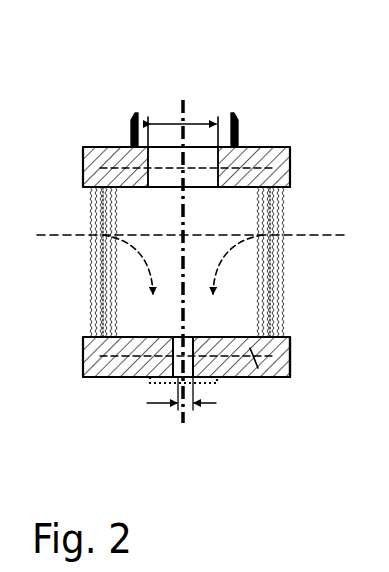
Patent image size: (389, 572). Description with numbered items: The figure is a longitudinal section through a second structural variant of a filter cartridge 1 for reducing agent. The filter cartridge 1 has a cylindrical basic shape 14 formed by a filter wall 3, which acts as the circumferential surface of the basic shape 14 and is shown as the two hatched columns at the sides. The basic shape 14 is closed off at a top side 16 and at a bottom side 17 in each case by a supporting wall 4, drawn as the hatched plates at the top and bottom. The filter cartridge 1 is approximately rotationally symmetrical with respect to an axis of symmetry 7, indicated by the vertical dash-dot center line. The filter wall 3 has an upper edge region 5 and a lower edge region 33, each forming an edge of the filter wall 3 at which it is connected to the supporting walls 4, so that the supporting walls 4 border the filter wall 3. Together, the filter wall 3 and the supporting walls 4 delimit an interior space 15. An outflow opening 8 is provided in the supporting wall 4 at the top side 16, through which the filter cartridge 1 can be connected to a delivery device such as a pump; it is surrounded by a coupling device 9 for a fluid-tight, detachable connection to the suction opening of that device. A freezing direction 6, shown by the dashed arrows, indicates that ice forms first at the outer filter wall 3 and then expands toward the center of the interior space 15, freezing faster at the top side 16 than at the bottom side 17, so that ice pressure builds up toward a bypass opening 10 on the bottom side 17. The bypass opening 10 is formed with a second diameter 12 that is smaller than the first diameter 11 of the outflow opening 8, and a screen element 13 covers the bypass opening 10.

The filter cartridge 1 is at (69, 129).
The filter wall 3 is at (88, 203).
The supporting wall 4 is at (248, 153).
The upper edge region 5 is at (263, 187).
The freezing direction 6 is at (60, 236).
The axis of symmetry 7 is at (185, 89).
The outflow opening 8 is at (172, 147).
The coupling device 9 is at (131, 135).
The bypass opening 10 is at (176, 414).
The first diameter 11 is at (193, 125).
The second diameter 12 is at (194, 414).
The screen element 13 is at (151, 386).
The basic shape 14 is at (290, 375).
The interior space 15 is at (245, 277).
The top side 16 is at (250, 147).
The bottom side 17 is at (258, 368).
The lower edge region 33 is at (290, 337).